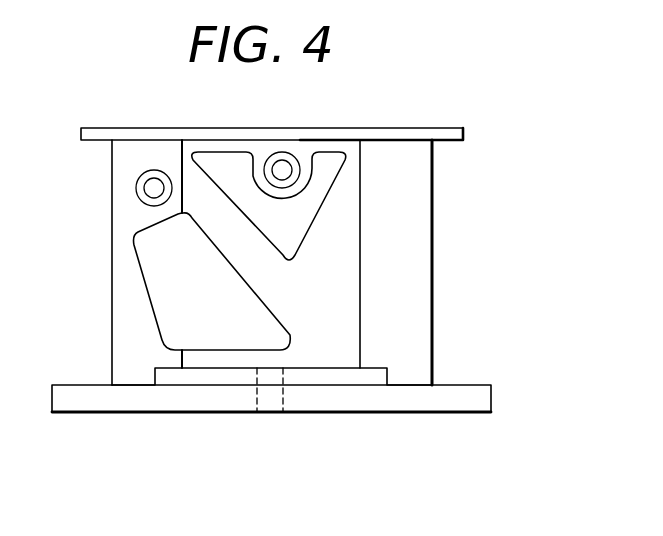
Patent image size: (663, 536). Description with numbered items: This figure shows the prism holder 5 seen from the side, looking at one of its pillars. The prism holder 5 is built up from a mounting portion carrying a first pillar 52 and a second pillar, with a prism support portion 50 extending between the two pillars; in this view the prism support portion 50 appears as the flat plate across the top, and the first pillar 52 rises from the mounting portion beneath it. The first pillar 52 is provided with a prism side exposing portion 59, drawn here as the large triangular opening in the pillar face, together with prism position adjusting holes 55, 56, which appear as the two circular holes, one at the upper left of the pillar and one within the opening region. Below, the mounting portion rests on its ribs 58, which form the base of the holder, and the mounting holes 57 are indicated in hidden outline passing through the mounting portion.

The prism holder 5 is at (490, 163).
The prism support portion 50 is at (440, 136).
The first pillar 52 is at (130, 282).
The prism position adjusting hole 55 is at (148, 188).
The prism position adjusting hole 56 is at (282, 170).
The mounting holes 57 is at (260, 413).
The ribs 58 is at (65, 390).
The prism side exposing portion 59 is at (285, 225).